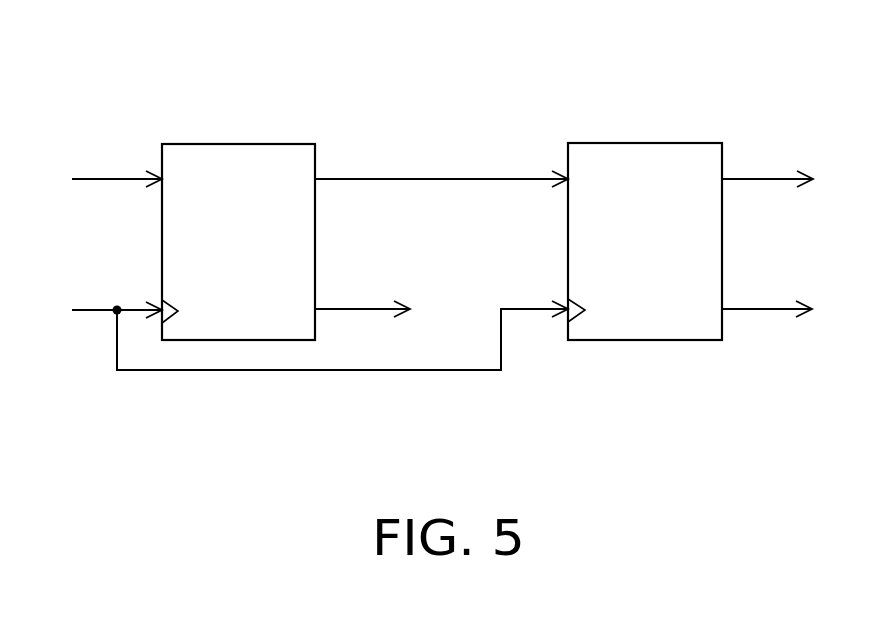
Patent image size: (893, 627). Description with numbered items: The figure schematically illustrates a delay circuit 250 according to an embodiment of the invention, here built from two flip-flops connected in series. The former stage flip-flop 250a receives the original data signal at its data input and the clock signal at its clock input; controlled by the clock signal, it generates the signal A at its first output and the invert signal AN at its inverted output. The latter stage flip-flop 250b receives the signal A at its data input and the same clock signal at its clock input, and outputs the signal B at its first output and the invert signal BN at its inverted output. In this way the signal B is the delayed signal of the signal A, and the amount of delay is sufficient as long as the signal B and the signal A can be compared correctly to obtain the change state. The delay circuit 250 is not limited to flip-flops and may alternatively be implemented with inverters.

The delay circuit 250 is at (70, 67).
The former stage flip-flop 250a is at (238, 144).
The latter stage flip-flop 250b is at (643, 143).